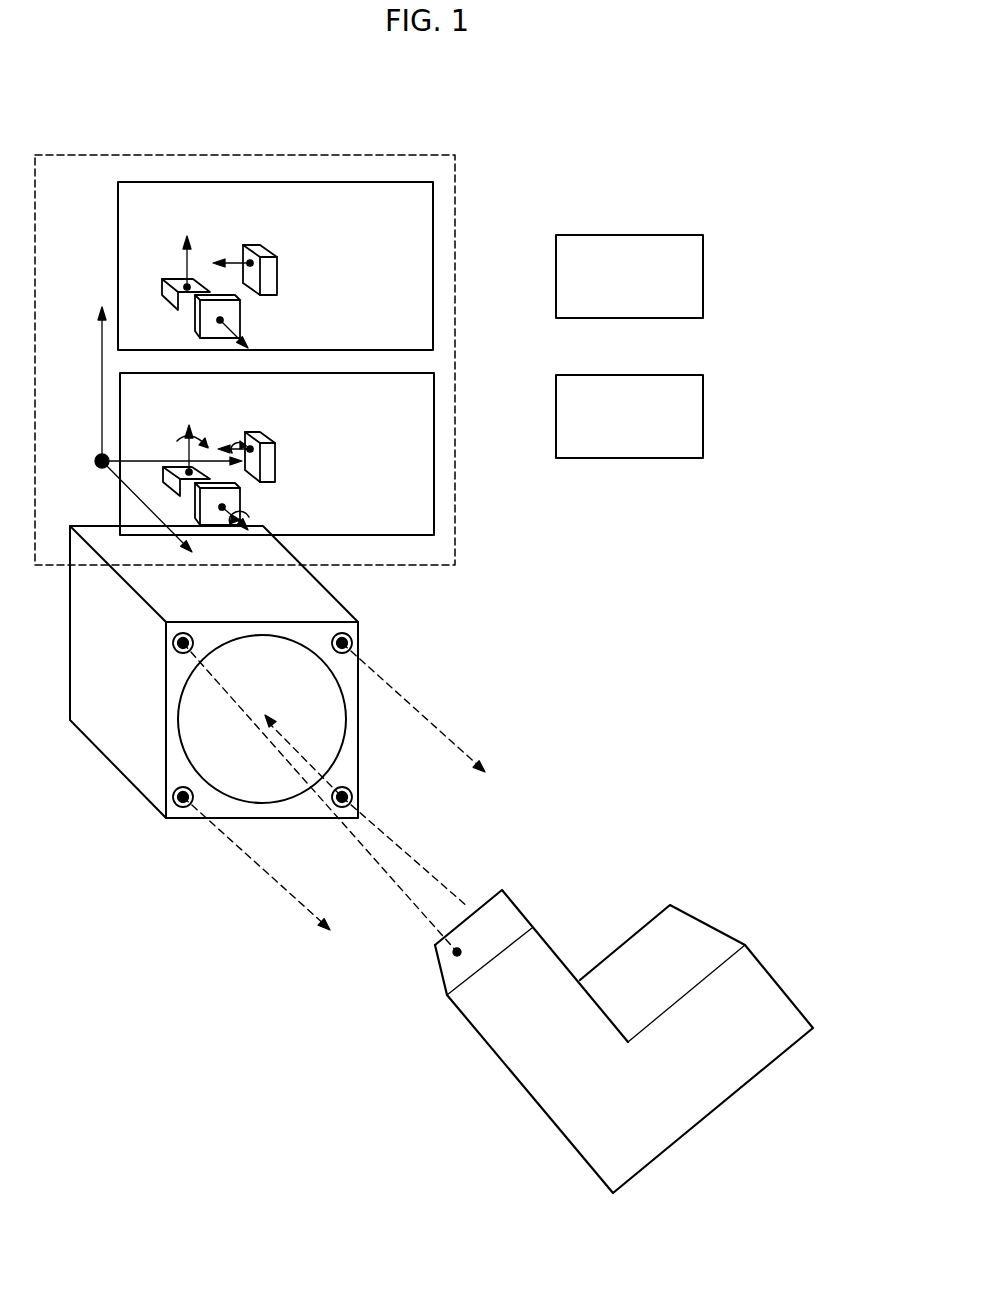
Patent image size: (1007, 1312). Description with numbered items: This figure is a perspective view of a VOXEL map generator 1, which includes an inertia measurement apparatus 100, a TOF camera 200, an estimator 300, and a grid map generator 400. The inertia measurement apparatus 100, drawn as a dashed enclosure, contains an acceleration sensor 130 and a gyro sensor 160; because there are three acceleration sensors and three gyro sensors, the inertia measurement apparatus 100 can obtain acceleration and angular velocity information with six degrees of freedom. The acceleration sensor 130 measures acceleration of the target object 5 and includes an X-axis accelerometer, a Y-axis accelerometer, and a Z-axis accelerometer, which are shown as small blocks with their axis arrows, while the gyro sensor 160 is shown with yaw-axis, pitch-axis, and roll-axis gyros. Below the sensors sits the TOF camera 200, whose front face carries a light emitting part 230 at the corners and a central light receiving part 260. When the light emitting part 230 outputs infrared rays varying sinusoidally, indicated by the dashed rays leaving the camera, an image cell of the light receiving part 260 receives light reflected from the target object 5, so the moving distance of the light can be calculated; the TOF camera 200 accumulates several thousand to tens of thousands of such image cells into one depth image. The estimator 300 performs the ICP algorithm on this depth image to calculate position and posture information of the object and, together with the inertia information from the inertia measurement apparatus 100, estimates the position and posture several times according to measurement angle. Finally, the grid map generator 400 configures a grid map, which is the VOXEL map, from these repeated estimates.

The VOXEL map generator 1 is at (397, 76).
The inertia measurement apparatus 100 is at (280, 155).
The acceleration sensor 130 is at (434, 280).
The gyro sensor 160 is at (434, 475).
The TOF camera 200 is at (275, 739).
The light emitting part 230 is at (174, 798).
The light receiving part 260 is at (193, 744).
The estimator 300 is at (703, 273).
The grid map generator 400 is at (703, 413).
The target object 5 is at (700, 1110).